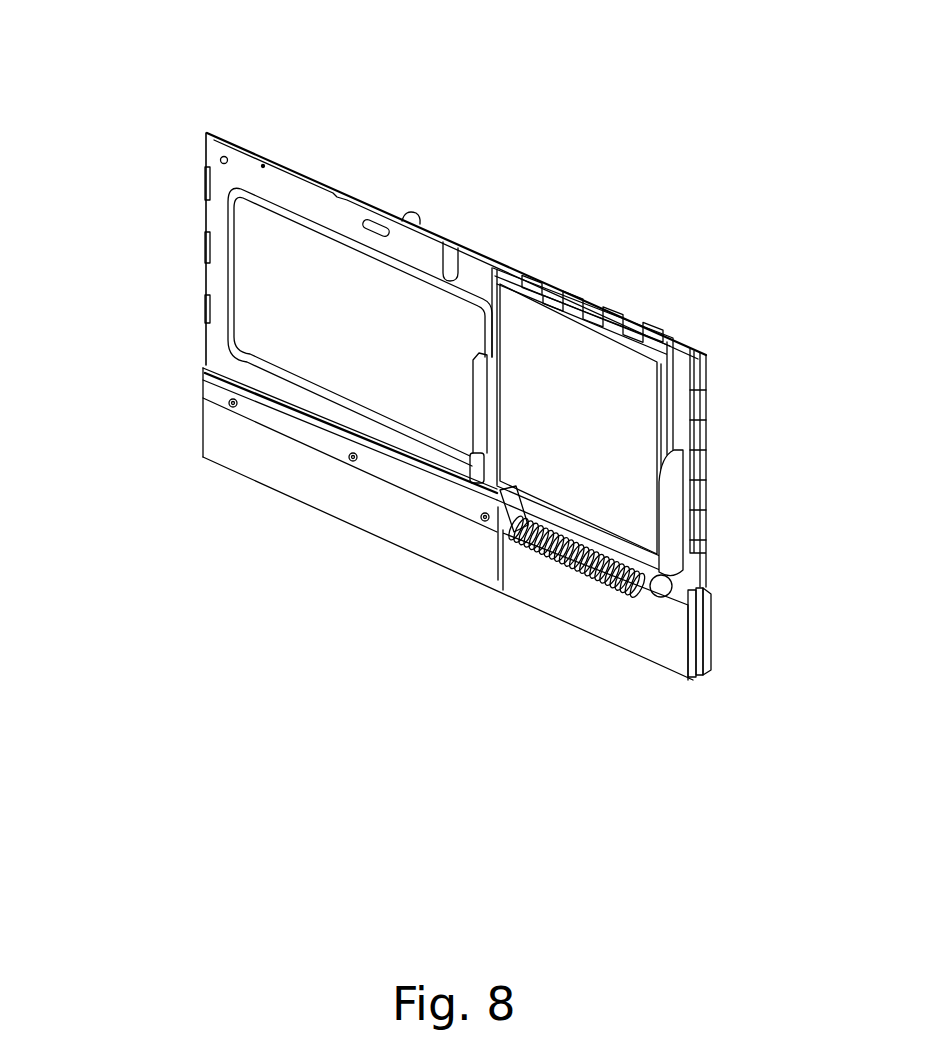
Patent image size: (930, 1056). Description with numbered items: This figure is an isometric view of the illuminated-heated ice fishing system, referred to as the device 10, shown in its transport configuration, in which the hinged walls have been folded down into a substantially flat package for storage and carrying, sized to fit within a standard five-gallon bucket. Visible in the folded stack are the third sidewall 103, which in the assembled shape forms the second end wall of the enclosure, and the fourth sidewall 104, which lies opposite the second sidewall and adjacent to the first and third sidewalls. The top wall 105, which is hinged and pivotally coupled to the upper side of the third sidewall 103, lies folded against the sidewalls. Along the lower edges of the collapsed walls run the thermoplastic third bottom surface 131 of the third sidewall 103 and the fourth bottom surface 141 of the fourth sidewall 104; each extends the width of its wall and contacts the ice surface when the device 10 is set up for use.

The device 10 is at (106, 81).
The third sidewall 103 is at (690, 572).
The fourth sidewall 104 is at (408, 257).
The top wall 105 is at (648, 412).
The third bottom surface 131 is at (682, 656).
The fourth bottom surface 141 is at (347, 505).